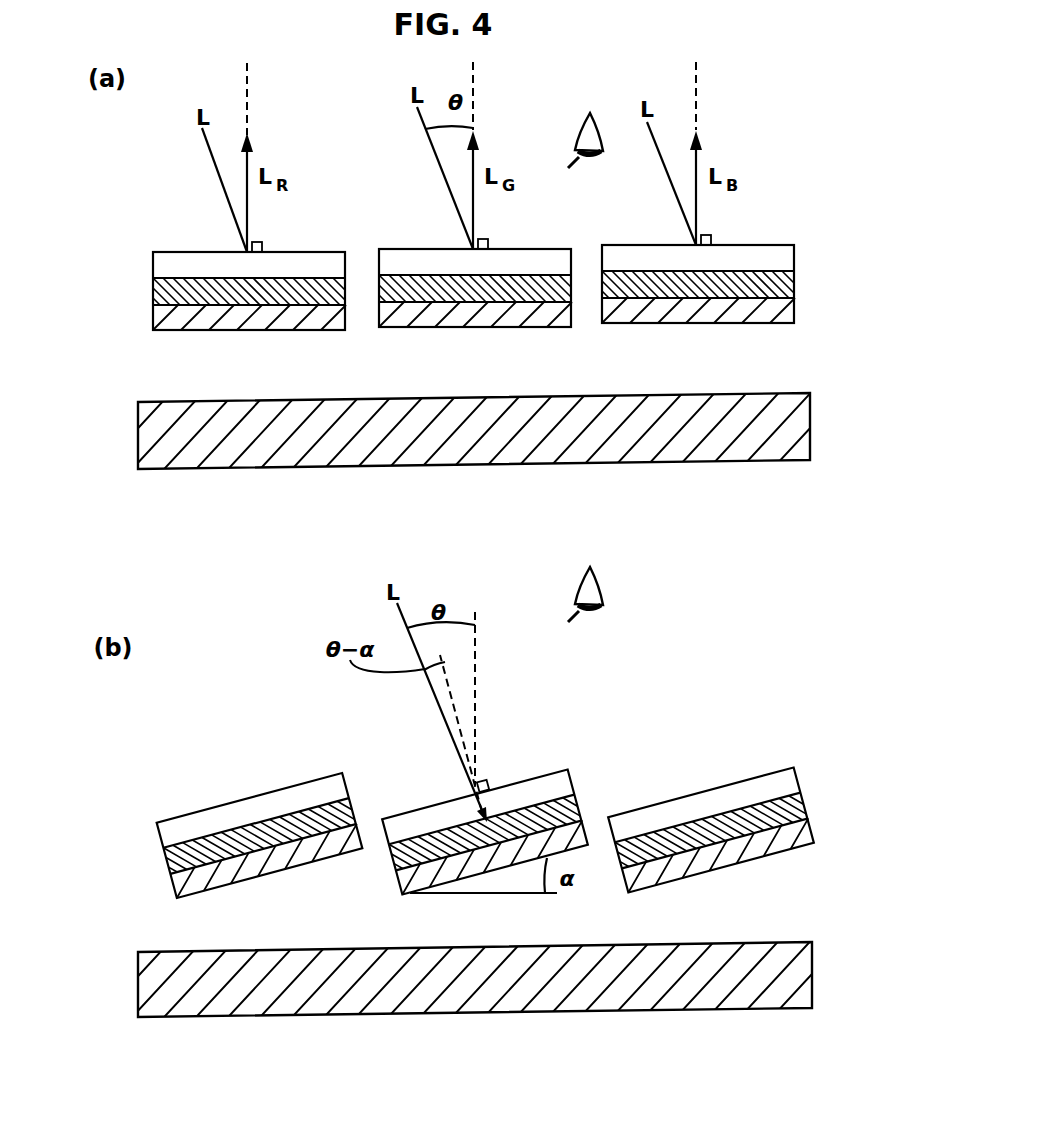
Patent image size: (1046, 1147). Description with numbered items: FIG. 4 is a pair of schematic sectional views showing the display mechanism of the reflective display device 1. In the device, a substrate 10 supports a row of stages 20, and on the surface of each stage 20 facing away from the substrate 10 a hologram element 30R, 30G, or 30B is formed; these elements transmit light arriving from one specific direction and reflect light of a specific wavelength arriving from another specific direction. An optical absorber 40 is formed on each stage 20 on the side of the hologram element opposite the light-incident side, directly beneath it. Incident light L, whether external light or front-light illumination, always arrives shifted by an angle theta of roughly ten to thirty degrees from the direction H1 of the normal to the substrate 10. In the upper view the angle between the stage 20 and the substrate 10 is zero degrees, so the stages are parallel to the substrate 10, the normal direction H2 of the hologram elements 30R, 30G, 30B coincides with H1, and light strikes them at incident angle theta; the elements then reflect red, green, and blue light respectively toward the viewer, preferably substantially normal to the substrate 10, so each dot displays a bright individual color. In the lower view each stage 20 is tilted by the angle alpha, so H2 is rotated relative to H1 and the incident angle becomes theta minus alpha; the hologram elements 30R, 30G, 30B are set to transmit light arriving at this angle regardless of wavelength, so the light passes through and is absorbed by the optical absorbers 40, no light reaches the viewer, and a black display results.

The reflective display device 1 is at (640, 492).
The substrate 10 is at (483, 457).
The stage 20 is at (153, 318).
The optical absorber 40 is at (153, 297).
The hologram element 30R is at (188, 255).
The hologram element 30G is at (410, 258).
The hologram element 30B is at (768, 255).
The direction of the normal to the substrate H1 is at (474, 108).
The direction of the normal to the hologram elements H2 is at (437, 657).